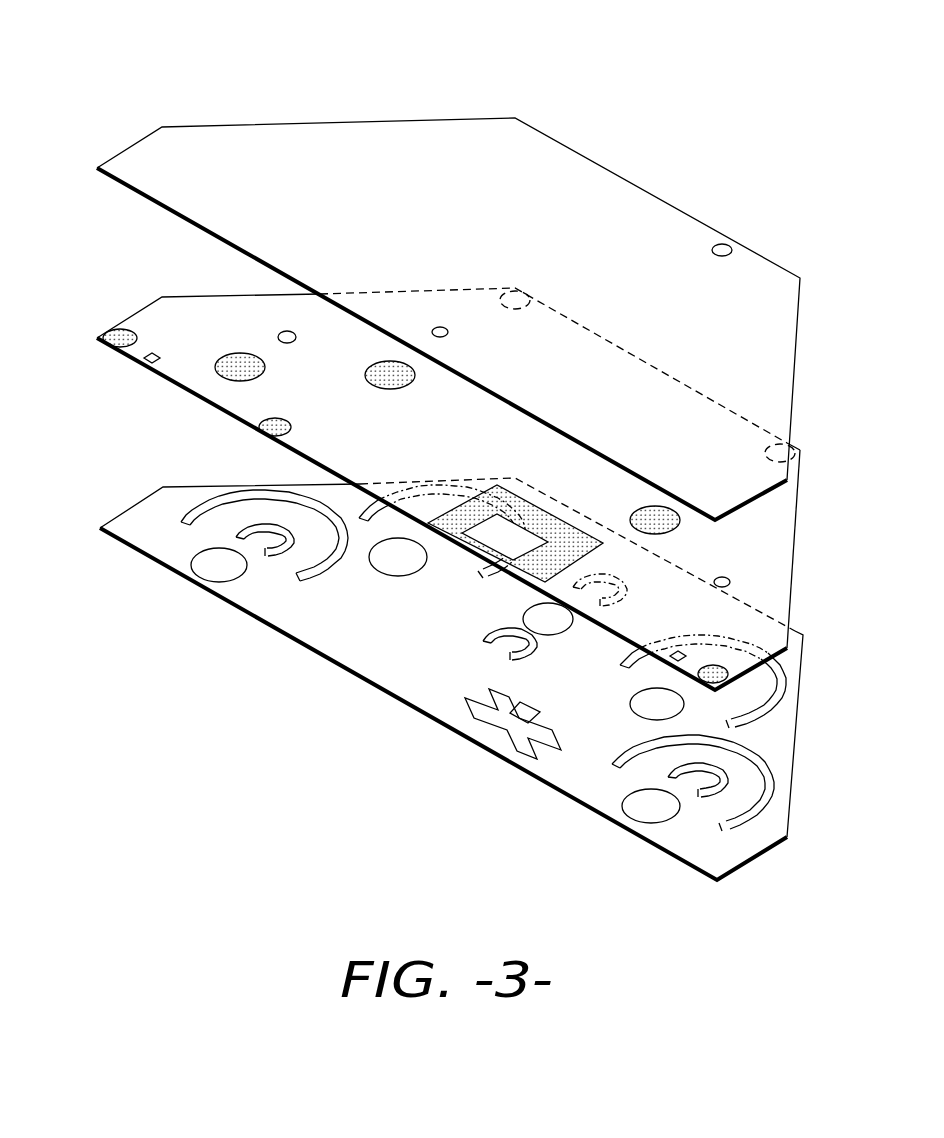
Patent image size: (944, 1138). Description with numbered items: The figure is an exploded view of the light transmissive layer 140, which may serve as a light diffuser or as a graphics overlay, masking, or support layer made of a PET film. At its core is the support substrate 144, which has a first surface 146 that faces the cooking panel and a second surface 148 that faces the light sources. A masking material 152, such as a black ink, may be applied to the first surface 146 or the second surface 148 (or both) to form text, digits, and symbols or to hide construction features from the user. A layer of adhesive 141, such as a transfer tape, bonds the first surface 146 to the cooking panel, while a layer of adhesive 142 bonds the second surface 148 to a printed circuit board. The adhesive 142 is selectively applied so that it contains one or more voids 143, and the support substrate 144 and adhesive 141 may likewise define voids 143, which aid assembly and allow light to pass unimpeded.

The light transmissive layer 140 is at (218, 63).
The adhesive 141 is at (668, 230).
The second surface 148 is at (470, 489).
The masking material 152 is at (148, 360).
The first surface 146 is at (765, 528).
The support substrate 144 is at (768, 557).
The voids 143 is at (496, 673).
The adhesive 142 is at (733, 845).